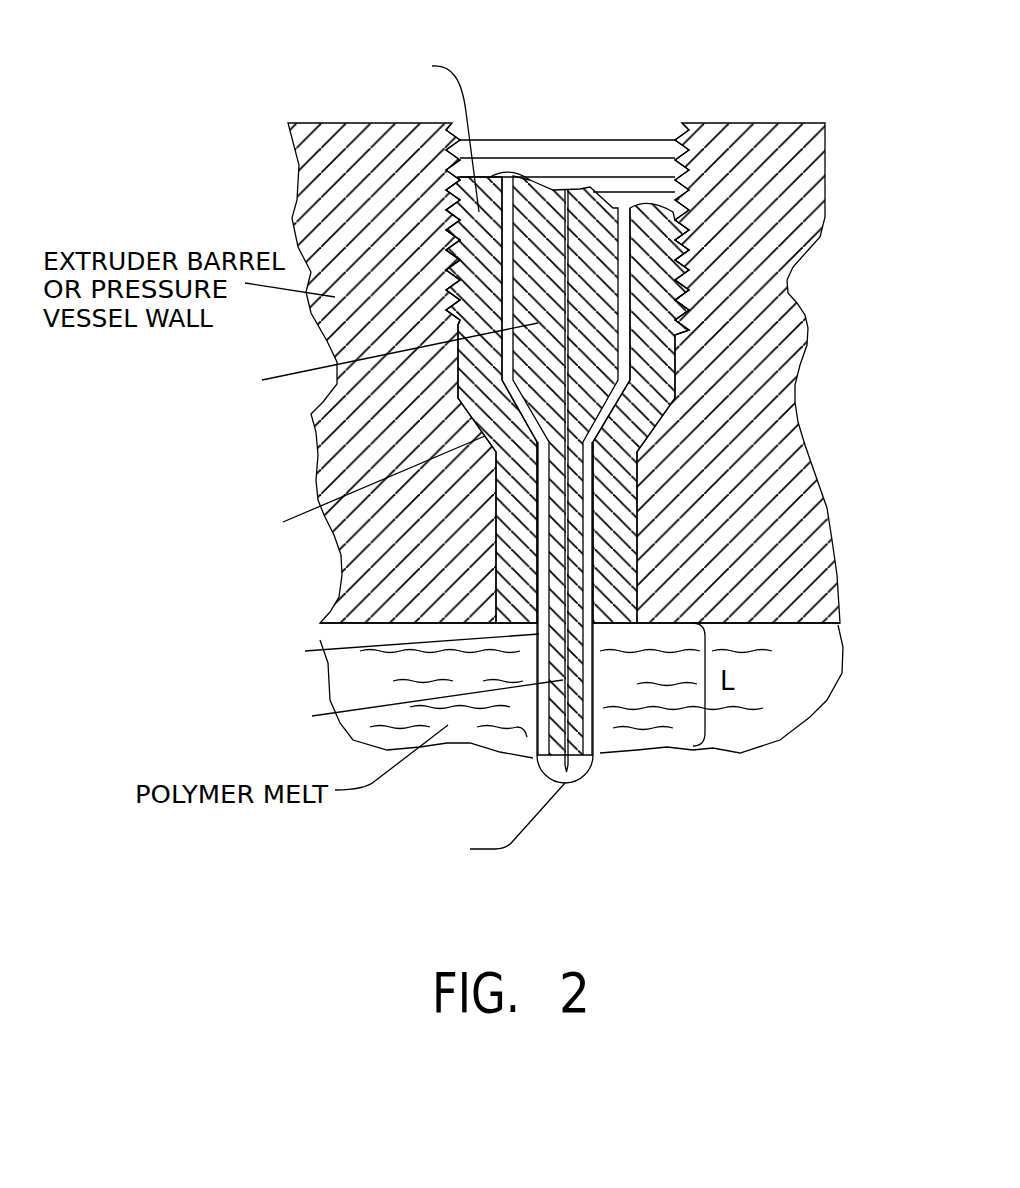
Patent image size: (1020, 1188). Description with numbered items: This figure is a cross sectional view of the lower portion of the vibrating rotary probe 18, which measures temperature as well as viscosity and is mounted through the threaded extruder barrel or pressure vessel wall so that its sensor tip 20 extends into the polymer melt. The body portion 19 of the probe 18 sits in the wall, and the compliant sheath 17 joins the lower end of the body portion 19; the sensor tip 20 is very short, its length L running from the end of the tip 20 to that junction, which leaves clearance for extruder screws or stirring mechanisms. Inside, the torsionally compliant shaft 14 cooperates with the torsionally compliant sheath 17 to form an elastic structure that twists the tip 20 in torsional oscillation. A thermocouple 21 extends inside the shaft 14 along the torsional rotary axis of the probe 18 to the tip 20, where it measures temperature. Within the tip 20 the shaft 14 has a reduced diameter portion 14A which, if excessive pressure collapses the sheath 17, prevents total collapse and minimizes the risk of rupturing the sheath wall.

The shaft 14 is at (553, 292).
The reduced diameter portion of the shaft 14A is at (581, 648).
The compliant sheath 17 is at (595, 692).
The probe 18 is at (672, 214).
The body portion of the probe 19 is at (676, 296).
The sensor tip 20 is at (607, 730).
The thermocouple 21 is at (307, 452).